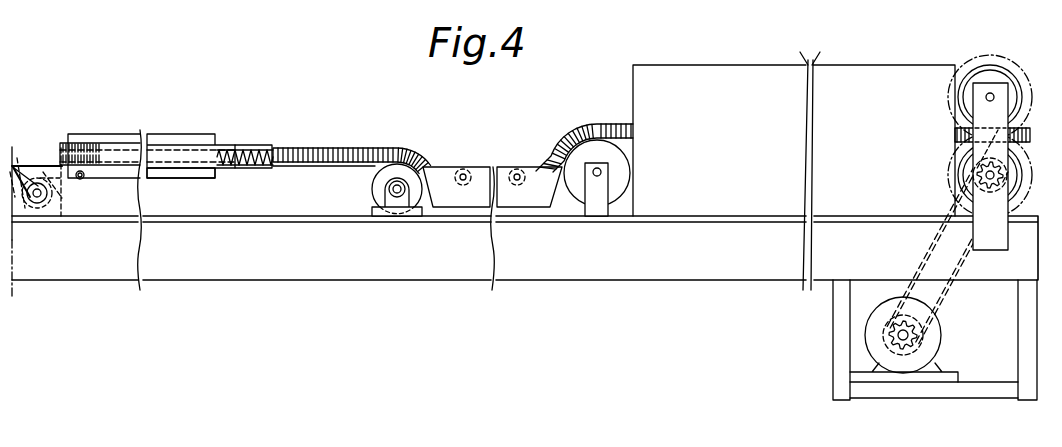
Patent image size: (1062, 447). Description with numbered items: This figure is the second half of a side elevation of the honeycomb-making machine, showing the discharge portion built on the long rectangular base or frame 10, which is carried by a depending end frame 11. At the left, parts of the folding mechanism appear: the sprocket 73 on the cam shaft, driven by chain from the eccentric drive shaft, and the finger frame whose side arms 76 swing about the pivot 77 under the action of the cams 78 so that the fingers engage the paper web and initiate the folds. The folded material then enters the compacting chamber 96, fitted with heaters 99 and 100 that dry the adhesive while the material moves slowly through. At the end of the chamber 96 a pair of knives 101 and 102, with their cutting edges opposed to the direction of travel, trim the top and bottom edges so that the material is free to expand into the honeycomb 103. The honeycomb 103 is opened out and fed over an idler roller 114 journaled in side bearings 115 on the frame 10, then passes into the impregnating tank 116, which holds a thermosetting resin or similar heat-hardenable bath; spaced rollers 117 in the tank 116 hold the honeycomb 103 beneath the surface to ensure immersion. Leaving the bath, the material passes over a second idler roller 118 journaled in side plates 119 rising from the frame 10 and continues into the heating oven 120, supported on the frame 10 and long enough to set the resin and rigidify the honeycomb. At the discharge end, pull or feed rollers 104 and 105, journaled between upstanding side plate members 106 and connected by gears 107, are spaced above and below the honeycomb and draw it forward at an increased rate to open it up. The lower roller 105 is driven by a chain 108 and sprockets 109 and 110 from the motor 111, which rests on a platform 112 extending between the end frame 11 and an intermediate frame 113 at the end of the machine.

The base or frame 10 is at (636, 272).
The end frame 11 is at (1030, 330).
The sprocket 73 is at (24, 210).
The side arm 76 is at (50, 186).
The pivot 77 is at (86, 178).
The cam 78 is at (22, 162).
The compacting chamber 96 is at (100, 147).
The heater 99 is at (185, 134).
The heater 100 is at (188, 176).
The knife 101 is at (256, 150).
The knife 102 is at (255, 170).
The honeycomb 103 is at (322, 150).
The pull roller 104 is at (1003, 82).
The pull roller 105 is at (967, 164).
The side plate member 106 is at (987, 83).
The gear 107 is at (962, 60).
The chain 108 is at (946, 301).
The sprocket 109 is at (956, 191).
The sprocket 110 is at (883, 332).
The motor 111 is at (925, 345).
The platform 112 is at (973, 390).
The intermediate frame 113 is at (842, 318).
The idler roller 114 is at (375, 189).
The side bearing 115 is at (393, 203).
The impregnating tank 116 is at (521, 208).
The roller 117 is at (510, 167).
The idler roller 118 is at (588, 150).
The side plate 119 is at (598, 190).
The heating oven 120 is at (794, 125).